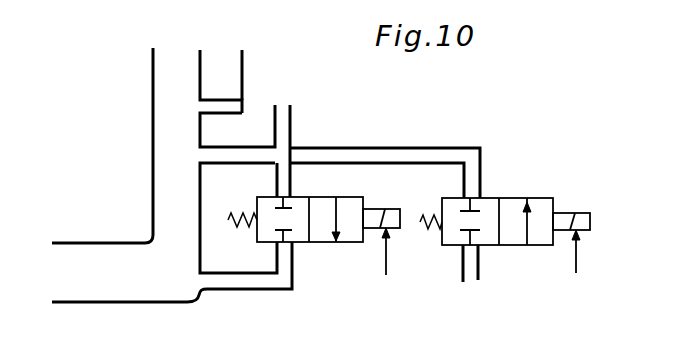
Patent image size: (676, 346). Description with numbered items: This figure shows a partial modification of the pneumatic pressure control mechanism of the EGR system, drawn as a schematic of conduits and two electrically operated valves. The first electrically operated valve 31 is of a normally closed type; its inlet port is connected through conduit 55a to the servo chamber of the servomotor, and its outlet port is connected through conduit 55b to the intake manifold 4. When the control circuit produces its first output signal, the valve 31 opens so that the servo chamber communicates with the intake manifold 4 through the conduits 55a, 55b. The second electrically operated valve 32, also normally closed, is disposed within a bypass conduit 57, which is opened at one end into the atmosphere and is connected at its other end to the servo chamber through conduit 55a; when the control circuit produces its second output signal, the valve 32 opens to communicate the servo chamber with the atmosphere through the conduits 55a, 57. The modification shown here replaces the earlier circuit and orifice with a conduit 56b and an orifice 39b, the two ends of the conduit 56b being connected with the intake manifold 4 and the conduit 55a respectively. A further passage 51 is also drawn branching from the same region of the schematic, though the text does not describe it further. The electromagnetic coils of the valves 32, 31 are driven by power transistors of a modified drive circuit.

The intake manifold 4 is at (110, 241).
The fluid passage 51 is at (244, 76).
The conduit 56b is at (212, 146).
The conduit 55a is at (291, 120).
The bypass conduit 57 is at (392, 147).
The orifice 39b is at (253, 162).
The conduit 55b is at (242, 289).
The first electrically operated valve 31 is at (305, 250).
The second electrically operated valve 32 is at (495, 190).